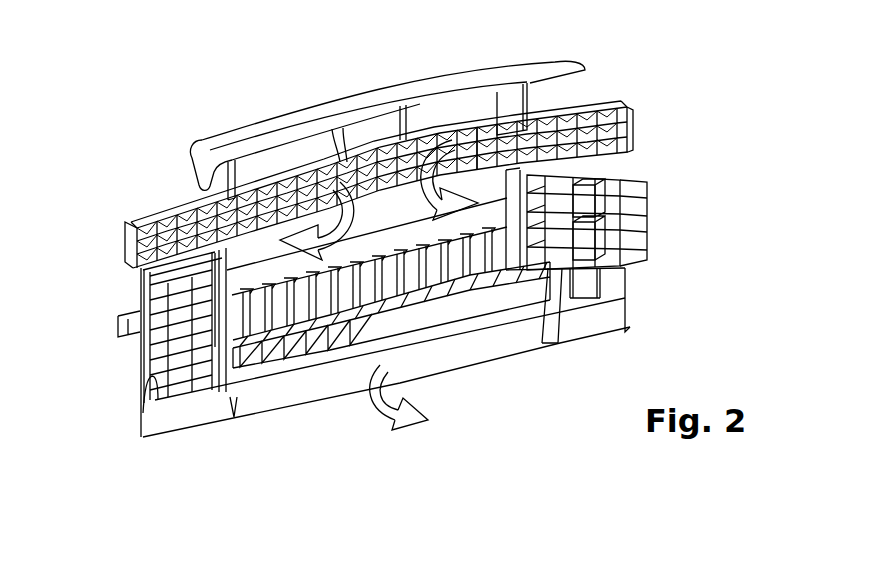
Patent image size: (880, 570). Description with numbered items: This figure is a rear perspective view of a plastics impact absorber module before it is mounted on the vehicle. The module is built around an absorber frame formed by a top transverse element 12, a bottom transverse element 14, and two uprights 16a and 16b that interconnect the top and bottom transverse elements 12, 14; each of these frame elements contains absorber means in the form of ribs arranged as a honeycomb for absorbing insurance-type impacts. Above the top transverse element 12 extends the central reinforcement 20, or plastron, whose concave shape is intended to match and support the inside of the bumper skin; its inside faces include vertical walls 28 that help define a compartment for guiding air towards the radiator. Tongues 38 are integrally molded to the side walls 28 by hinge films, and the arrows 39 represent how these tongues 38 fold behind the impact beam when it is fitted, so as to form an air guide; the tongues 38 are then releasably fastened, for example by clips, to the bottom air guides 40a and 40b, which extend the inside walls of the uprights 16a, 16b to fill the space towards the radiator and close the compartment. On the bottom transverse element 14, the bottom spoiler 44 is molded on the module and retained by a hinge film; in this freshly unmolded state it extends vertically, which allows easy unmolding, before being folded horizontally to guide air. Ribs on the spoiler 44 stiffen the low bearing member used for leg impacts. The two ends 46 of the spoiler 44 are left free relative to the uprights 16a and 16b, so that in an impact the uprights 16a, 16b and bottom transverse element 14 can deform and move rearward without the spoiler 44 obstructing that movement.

The top transverse element 12 is at (137, 223).
The bottom transverse element 14 is at (187, 212).
The upright 16a is at (650, 203).
The upright 16b is at (127, 320).
The central reinforcement 20 is at (347, 86).
The vertical wall 28 is at (512, 103).
The tongue 38 is at (480, 133).
The arrow 39 is at (433, 198).
The bottom air guide 40a is at (556, 347).
The bottom air guide 40b is at (152, 300).
The bottom spoiler 44 is at (460, 348).
The end 46 is at (155, 440).